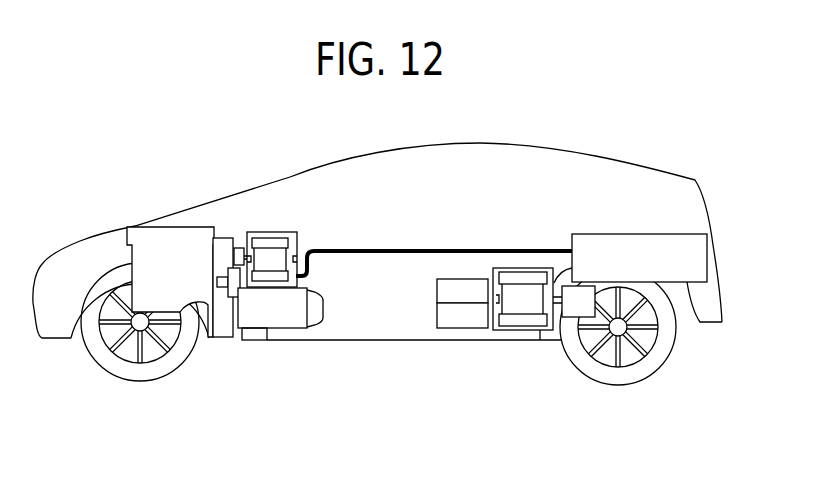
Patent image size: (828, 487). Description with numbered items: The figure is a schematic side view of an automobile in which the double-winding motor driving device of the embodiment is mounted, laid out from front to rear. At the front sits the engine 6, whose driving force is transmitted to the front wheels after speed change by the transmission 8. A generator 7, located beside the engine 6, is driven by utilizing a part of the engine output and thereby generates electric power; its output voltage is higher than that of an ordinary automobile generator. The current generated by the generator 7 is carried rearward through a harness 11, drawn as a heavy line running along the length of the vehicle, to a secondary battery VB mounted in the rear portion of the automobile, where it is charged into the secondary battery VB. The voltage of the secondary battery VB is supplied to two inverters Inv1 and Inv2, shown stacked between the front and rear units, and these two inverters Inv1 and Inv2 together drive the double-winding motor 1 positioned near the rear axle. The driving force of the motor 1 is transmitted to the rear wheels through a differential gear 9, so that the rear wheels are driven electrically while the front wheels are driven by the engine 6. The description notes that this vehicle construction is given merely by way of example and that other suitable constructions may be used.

The double-winding motor 1 is at (512, 333).
The engine 6 is at (183, 227).
The generator 7 is at (277, 233).
The transmission 8 is at (268, 323).
The differential gear 9 is at (565, 318).
The harness 11 is at (447, 249).
The secondary battery VB is at (637, 233).
The inverter Inv1 is at (437, 290).
The inverter Inv2 is at (437, 319).